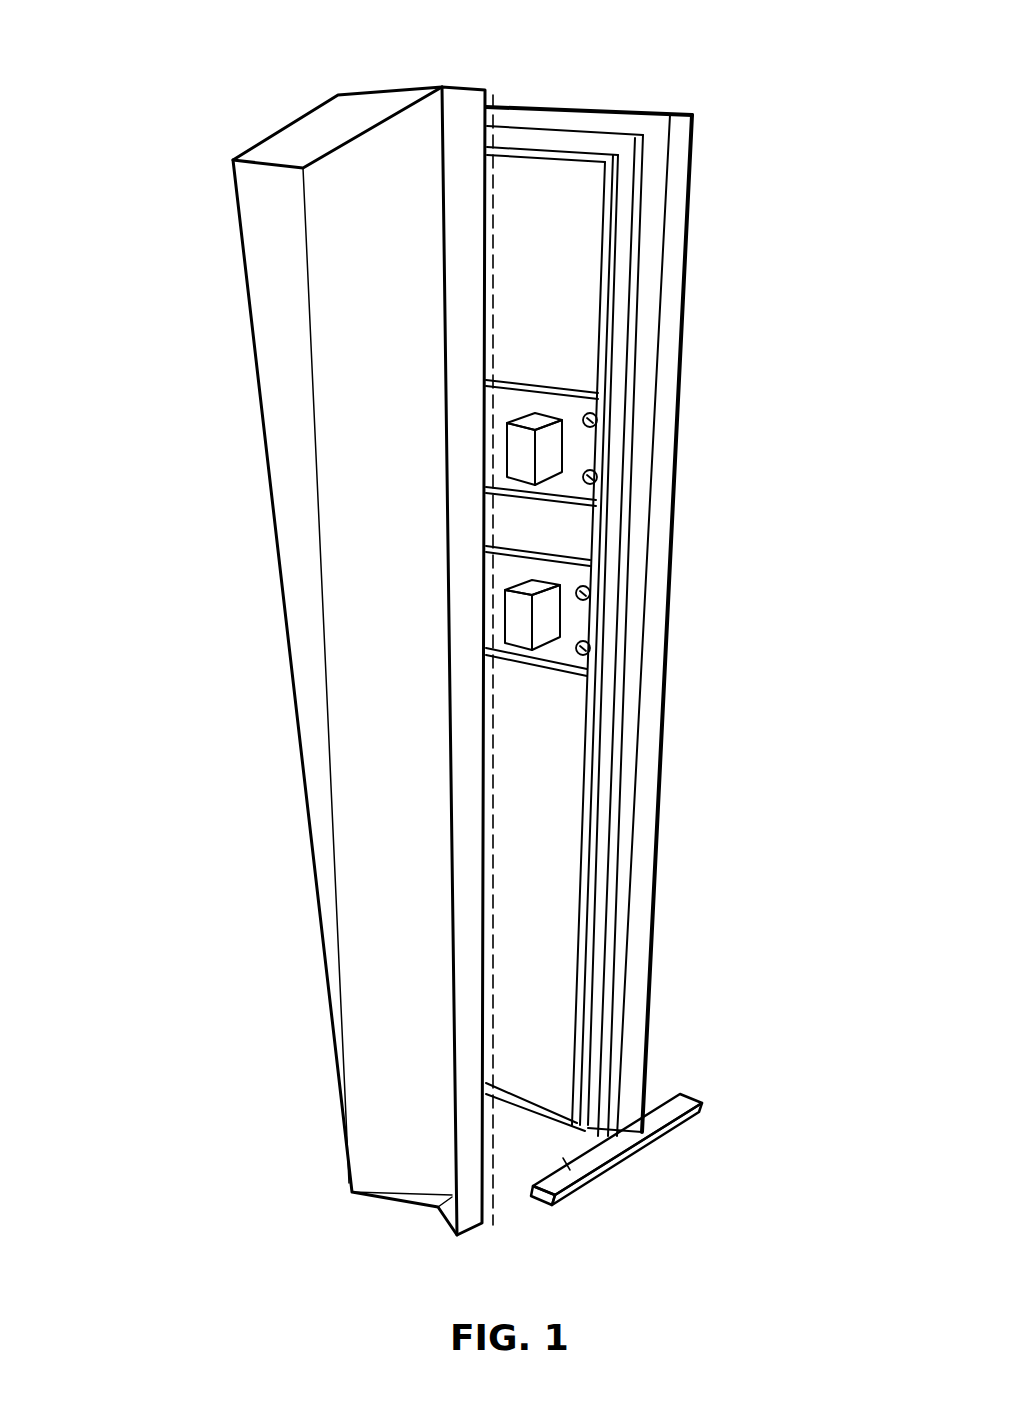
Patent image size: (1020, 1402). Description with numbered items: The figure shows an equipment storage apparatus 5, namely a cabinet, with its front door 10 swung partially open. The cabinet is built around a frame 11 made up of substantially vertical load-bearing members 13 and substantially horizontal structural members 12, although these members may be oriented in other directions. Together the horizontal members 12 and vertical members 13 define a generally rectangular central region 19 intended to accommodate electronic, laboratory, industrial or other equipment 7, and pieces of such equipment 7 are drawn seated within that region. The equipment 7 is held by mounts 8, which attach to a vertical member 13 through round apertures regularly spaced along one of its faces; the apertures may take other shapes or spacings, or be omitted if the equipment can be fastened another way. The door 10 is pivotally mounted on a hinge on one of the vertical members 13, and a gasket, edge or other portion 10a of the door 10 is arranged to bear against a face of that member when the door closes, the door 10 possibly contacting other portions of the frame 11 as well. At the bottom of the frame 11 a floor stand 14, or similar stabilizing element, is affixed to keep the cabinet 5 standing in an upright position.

The equipment storage apparatus 5 is at (702, 97).
The equipment 7 is at (541, 371).
The mounts 8 is at (597, 420).
The front door 10 is at (208, 442).
The edge portion of door 10a is at (503, 190).
The frame 11 is at (692, 720).
The horizontal structural members 12 is at (553, 121).
The vertical load-bearing members 13 is at (677, 200).
The floor stand 14 is at (630, 1153).
The central region 19 is at (549, 895).